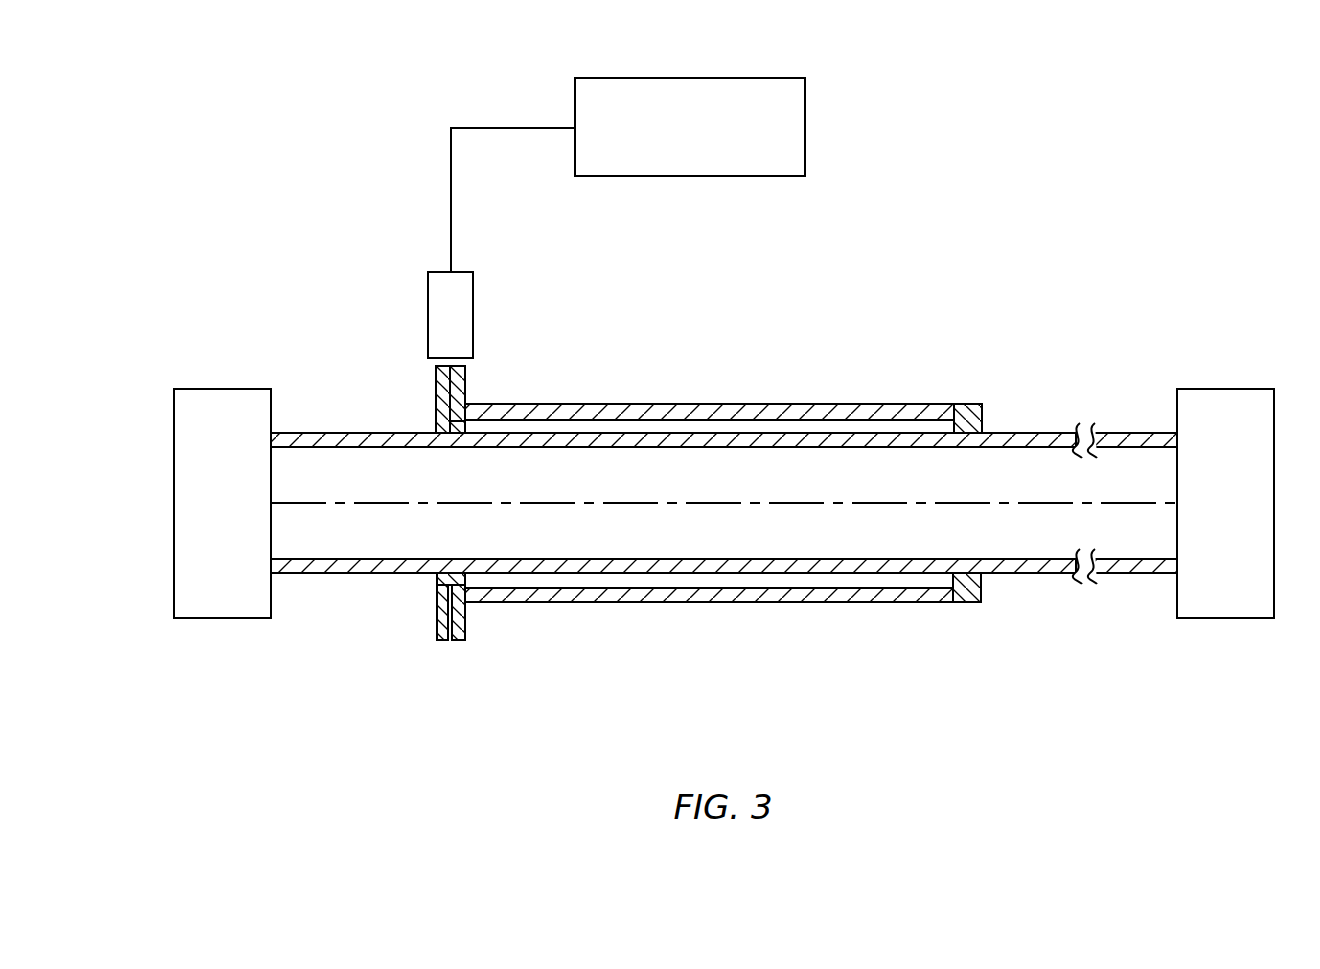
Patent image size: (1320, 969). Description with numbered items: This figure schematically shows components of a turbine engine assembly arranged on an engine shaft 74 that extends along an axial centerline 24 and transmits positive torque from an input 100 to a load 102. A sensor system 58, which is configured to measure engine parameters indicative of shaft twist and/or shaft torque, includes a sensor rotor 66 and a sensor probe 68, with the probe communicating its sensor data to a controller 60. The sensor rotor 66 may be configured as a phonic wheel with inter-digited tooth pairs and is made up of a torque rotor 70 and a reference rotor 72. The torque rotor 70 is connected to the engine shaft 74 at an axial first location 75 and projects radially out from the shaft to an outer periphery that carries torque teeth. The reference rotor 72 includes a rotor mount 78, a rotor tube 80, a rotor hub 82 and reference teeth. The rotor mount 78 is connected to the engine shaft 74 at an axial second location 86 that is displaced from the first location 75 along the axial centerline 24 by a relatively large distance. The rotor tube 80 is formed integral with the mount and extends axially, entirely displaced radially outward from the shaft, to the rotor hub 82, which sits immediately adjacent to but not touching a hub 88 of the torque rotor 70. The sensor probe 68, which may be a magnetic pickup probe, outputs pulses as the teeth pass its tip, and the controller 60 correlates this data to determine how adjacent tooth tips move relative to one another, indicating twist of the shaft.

The axial centerline 24 is at (940, 503).
The sensor system 58 is at (655, 352).
The controller 60 is at (812, 126).
The sensor rotor 66 is at (679, 663).
The sensor probe 68 is at (475, 308).
The torque rotor 70 is at (413, 635).
The reference rotor 72 is at (542, 609).
The shaft 74 is at (1043, 416).
The axial first location 75 is at (452, 559).
The rotor mount 78 is at (982, 588).
The rotor tube 80 is at (940, 604).
The rotor hub 82 is at (470, 603).
The axial second location 86 is at (968, 559).
The hub 88 is at (436, 595).
The input 100 is at (1222, 618).
The load 102 is at (193, 618).